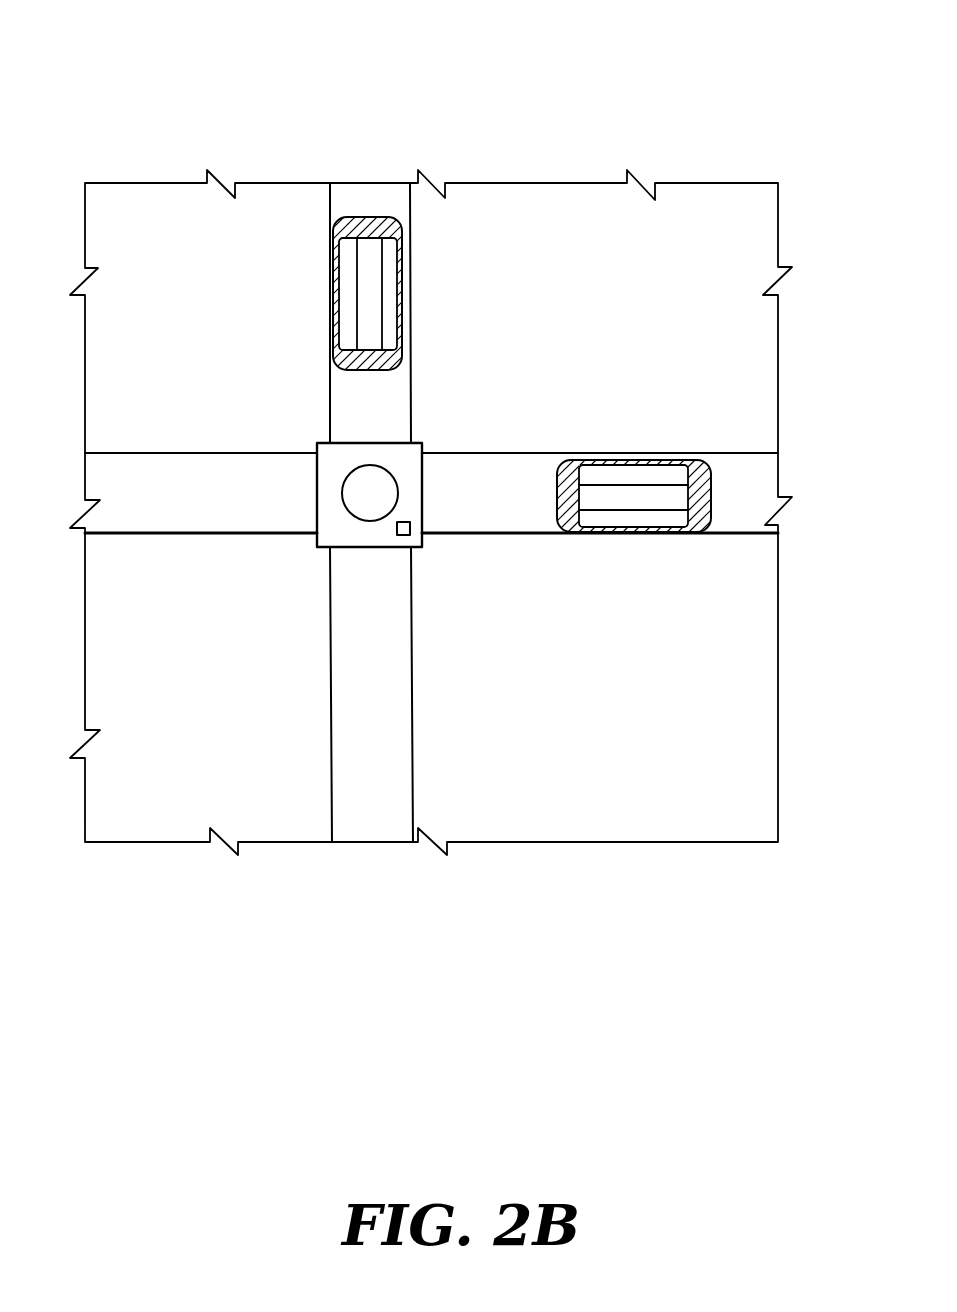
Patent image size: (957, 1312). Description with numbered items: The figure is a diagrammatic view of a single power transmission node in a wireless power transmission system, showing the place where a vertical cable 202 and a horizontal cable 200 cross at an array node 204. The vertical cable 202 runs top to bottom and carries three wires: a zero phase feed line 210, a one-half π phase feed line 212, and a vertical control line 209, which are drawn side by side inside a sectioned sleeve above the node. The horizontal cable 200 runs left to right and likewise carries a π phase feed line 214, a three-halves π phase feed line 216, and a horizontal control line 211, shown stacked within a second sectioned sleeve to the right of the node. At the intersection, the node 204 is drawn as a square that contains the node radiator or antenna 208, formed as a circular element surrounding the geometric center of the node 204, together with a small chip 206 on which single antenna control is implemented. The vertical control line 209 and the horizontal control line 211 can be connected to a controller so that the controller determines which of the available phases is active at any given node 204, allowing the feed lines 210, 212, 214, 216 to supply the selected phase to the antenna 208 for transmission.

The array node 204 is at (712, 66).
The horizontal cable 200 is at (541, 596).
The vertical cable 202 is at (300, 763).
The chip 206 is at (408, 548).
The node radiator or antenna 208 is at (345, 515).
The vertical control line 209 is at (393, 326).
The zero phase feed line 210 is at (345, 311).
The 1/2π phase feed line 212 is at (362, 262).
The π phase feed line 214 is at (598, 470).
The horizontal control line 211 is at (600, 522).
The 3/2π phase feed line 216 is at (672, 505).